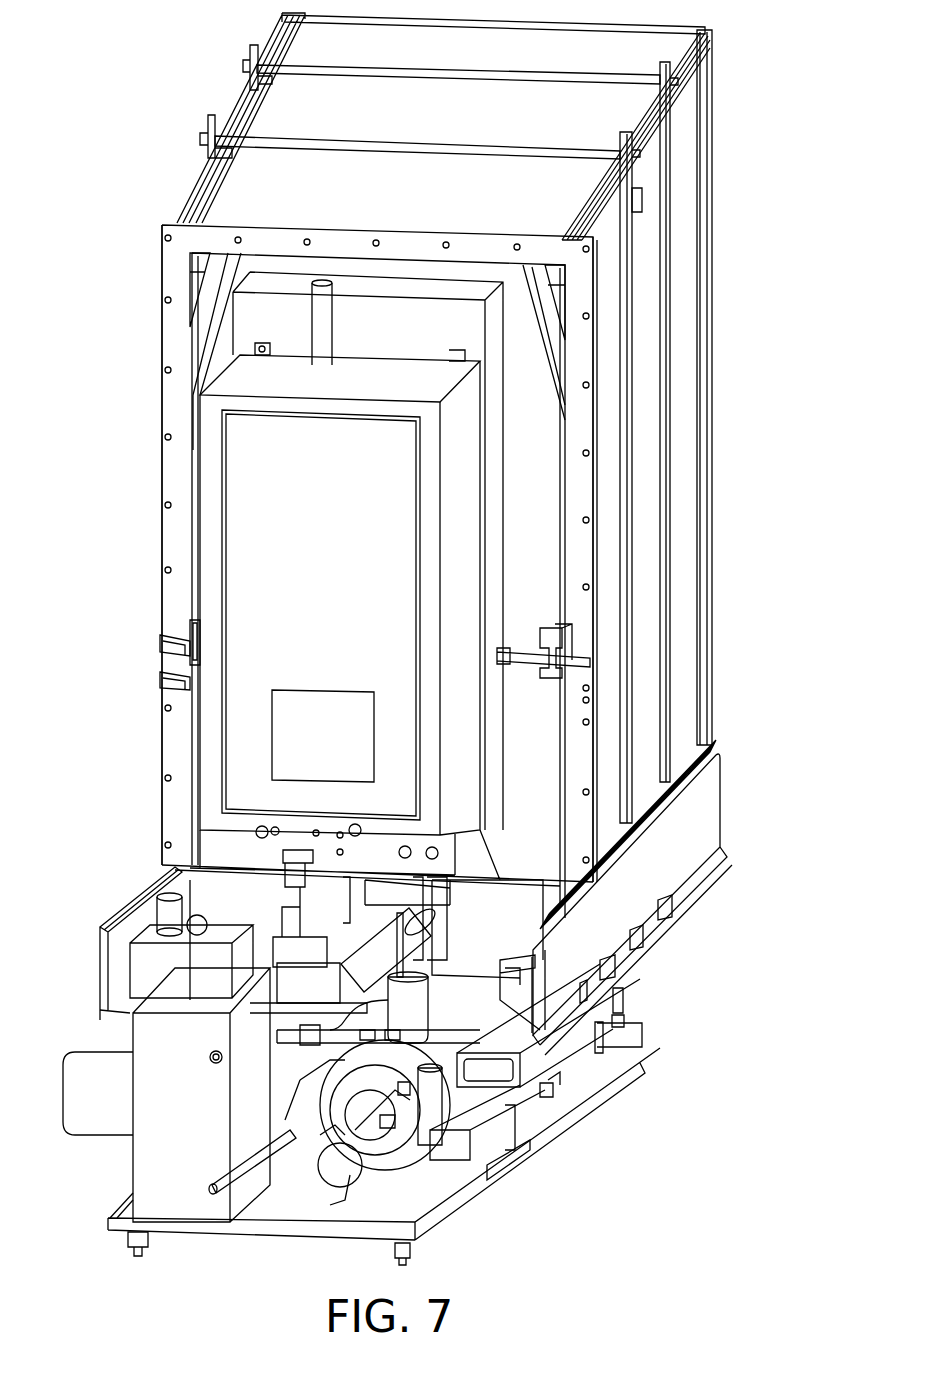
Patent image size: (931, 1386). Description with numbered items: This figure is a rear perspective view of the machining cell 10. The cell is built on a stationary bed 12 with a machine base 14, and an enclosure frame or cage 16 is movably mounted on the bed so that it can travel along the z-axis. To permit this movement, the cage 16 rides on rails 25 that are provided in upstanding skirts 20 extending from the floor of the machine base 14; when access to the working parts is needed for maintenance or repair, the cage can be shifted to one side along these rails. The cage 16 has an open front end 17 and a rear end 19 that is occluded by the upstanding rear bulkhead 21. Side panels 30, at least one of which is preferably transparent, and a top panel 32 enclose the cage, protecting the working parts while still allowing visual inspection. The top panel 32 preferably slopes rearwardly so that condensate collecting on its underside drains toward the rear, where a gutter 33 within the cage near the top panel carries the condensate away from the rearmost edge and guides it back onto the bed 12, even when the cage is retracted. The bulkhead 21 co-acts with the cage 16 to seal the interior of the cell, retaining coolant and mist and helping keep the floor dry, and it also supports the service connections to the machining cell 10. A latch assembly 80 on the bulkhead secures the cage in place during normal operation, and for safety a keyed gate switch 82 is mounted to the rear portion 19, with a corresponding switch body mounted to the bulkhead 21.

The machining cell 10 is at (168, 182).
The stationary bed 12 is at (560, 1058).
The machine base 14 is at (527, 1128).
The enclosure frame or cage 16 is at (712, 239).
The open front end 17 is at (714, 360).
The rear end 19 is at (166, 532).
The upstanding skirt 20 is at (688, 858).
The rear bulkhead 21 is at (545, 527).
The rails 25 is at (135, 907).
The side panel 30 is at (686, 501).
The top panel 32 is at (478, 55).
The gutter 33 is at (598, 239).
The latch assembly 80 is at (517, 665).
The gate switch 82 is at (163, 681).